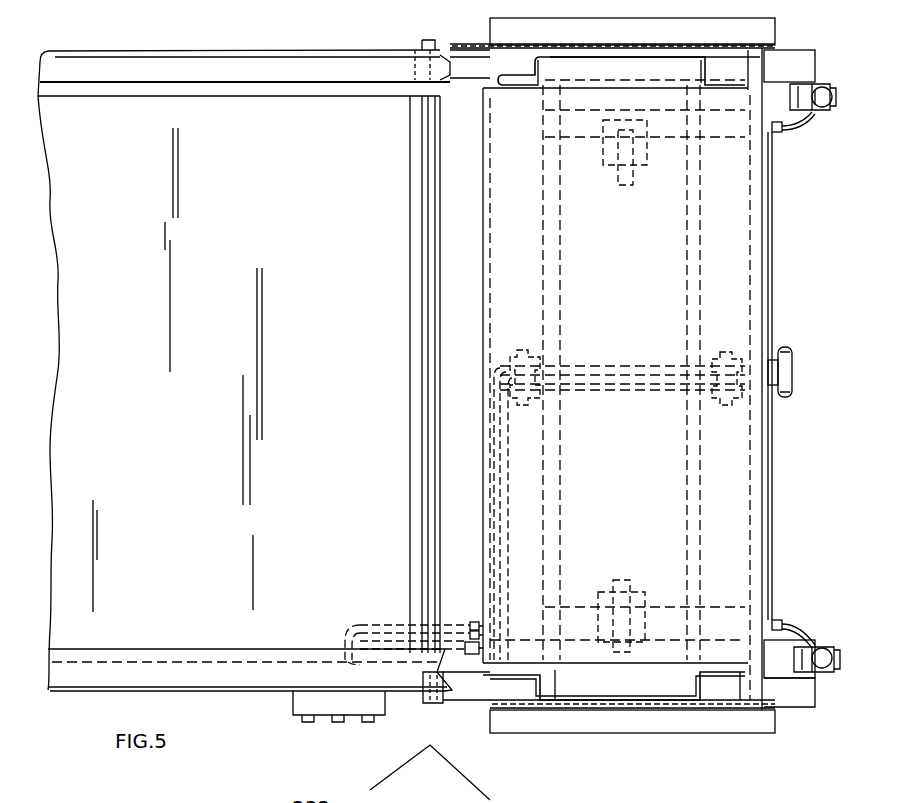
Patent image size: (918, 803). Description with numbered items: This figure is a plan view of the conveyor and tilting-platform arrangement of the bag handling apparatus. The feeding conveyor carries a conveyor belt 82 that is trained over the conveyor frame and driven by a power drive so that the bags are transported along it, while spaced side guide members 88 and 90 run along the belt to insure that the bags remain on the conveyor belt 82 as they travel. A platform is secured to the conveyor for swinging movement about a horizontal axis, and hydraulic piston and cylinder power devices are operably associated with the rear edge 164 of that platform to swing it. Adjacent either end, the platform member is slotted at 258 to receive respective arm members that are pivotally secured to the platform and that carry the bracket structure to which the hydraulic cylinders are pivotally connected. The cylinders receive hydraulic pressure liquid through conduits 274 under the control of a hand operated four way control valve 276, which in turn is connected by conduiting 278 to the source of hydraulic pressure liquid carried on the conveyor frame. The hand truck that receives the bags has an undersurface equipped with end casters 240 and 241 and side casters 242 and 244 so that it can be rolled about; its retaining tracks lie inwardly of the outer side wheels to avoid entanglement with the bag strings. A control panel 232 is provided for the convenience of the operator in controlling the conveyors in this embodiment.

The conveyor belt 82 is at (207, 112).
The side guide member 88 is at (157, 690).
The side guide member 90 is at (272, 72).
The rear edge of the platform 164 is at (765, 533).
The control panel 232 is at (318, 707).
The end caster 240 is at (618, 580).
The end caster 241 is at (625, 188).
The side caster 242 is at (540, 360).
The side caster 244 is at (718, 355).
The slot 258 is at (740, 640).
The conduit 274 is at (798, 628).
The four way control valve 276 is at (800, 358).
The conduiting 278 is at (457, 621).